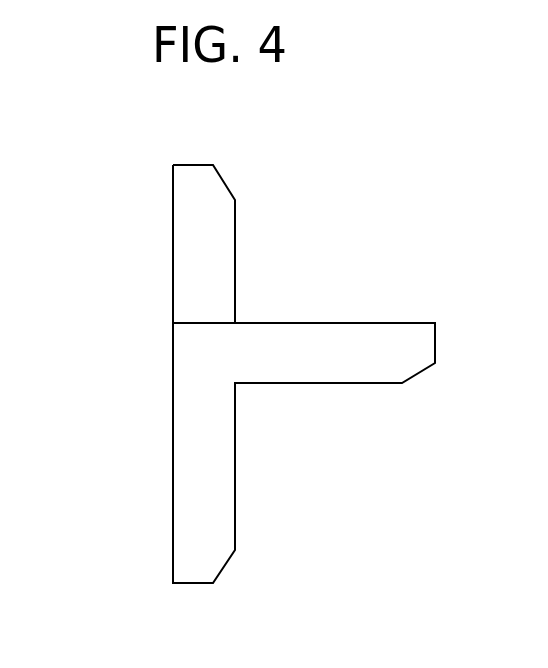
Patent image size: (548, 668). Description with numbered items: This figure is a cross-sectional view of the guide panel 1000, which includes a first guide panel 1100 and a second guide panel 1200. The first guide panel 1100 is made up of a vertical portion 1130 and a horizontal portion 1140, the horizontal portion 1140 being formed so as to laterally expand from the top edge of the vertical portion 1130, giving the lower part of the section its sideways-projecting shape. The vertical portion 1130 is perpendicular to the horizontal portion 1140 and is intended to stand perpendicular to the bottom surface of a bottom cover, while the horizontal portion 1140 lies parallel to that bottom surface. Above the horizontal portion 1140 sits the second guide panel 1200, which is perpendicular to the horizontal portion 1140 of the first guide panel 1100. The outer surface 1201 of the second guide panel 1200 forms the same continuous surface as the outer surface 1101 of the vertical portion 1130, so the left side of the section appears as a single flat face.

The guide panel 1000 is at (62, 143).
The first guide panel 1100 is at (380, 468).
The outer surface of the vertical portion 1101 is at (173, 434).
The vertical portion 1130 is at (228, 457).
The horizontal portion 1140 is at (357, 375).
The second guide panel 1200 is at (228, 249).
The outer surface of the second guide panel 1201 is at (173, 259).